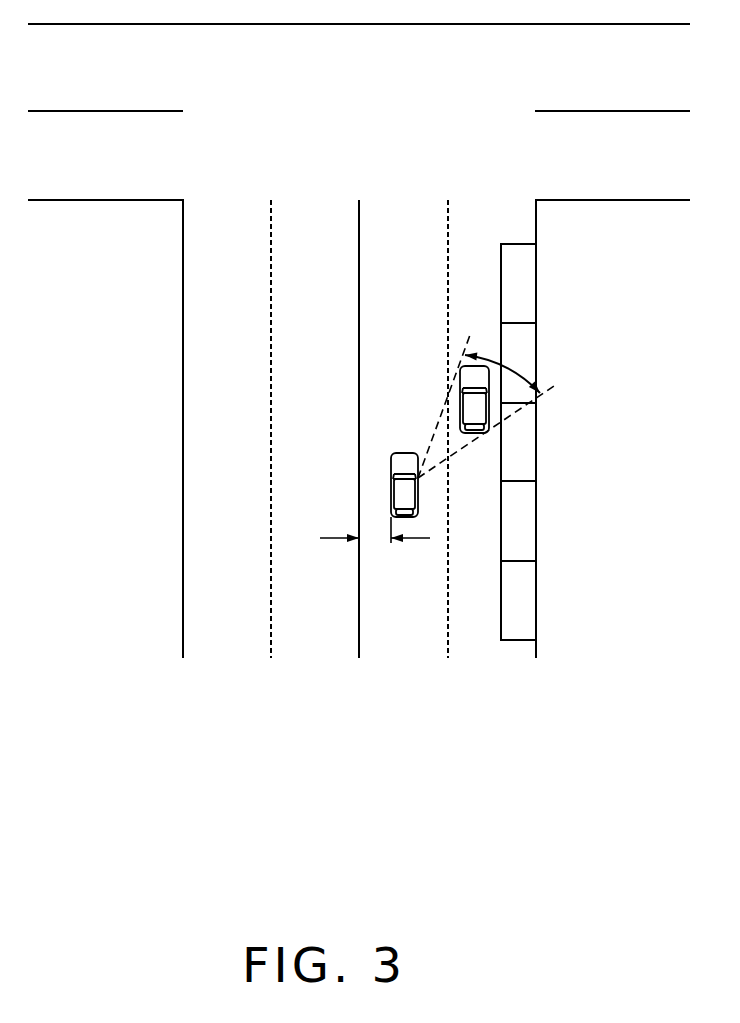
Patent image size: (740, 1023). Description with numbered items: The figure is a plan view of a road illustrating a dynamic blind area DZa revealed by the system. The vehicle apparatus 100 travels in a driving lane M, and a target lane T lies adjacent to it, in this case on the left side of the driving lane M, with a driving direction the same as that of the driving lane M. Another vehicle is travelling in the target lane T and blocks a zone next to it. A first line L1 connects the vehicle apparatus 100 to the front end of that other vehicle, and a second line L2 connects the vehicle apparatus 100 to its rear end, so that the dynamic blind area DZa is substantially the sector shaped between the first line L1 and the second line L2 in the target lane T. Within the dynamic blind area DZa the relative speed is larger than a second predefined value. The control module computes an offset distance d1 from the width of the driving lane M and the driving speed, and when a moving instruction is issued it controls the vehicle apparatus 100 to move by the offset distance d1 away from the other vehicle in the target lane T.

The driving lane M is at (402, 387).
The target lane T is at (479, 308).
The vehicle apparatus 100 is at (402, 499).
The first line L1 is at (467, 347).
The second line L2 is at (513, 415).
The dynamic blind area DZa is at (513, 365).
The offset distance d1 is at (375, 542).